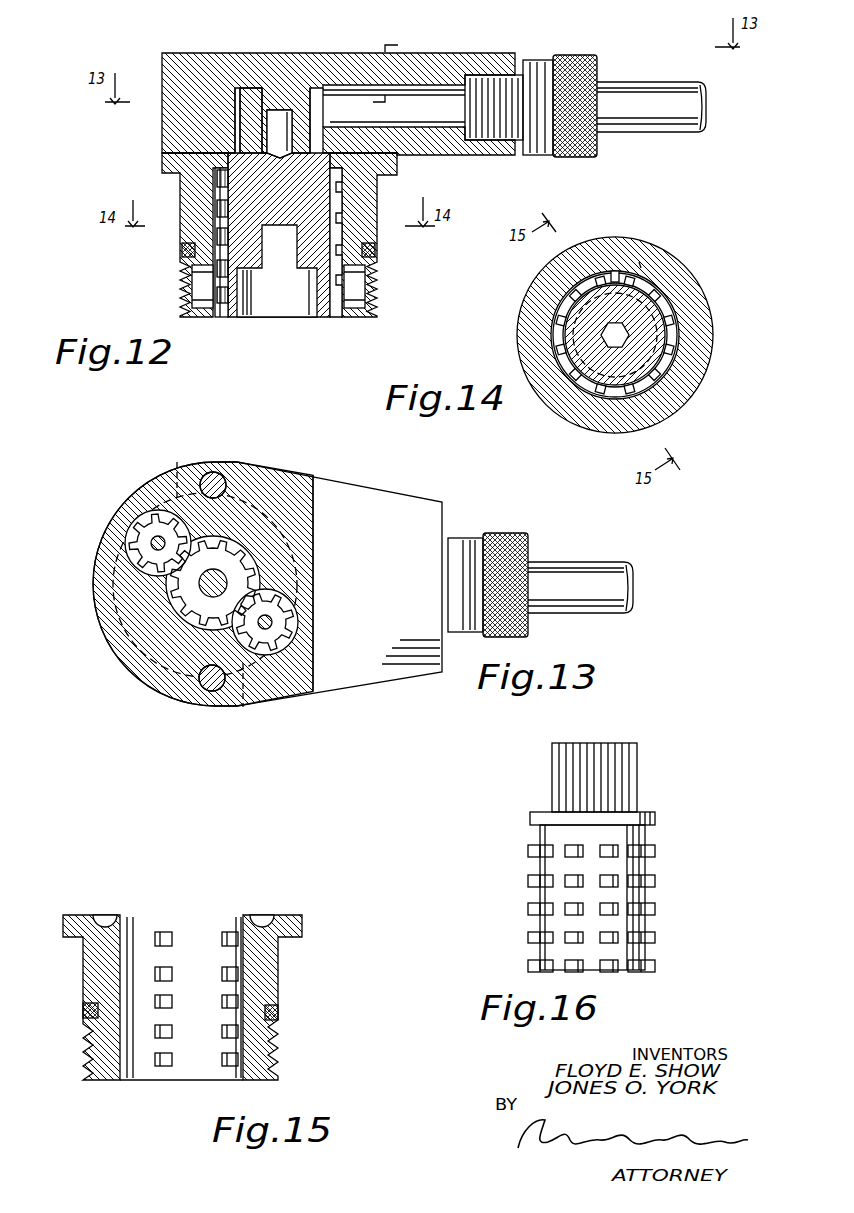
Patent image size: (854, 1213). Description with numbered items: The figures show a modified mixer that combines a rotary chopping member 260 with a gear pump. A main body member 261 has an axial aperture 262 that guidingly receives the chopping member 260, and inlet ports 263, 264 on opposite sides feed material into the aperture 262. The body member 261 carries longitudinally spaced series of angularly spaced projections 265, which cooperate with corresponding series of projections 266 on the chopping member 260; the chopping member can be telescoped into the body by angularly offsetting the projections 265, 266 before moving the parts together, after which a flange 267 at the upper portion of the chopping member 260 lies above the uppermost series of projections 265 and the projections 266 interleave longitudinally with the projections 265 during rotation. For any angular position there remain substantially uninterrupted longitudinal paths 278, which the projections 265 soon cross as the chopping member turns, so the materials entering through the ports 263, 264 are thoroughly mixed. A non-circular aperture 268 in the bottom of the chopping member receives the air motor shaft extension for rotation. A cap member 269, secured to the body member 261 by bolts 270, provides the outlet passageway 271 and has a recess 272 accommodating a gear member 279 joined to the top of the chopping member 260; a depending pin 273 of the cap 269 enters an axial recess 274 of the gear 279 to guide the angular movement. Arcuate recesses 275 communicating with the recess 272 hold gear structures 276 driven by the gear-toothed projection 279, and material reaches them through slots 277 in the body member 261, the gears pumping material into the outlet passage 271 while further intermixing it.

In FIG. 12, the rotary chopping member 260 is at (343, 185).
In FIG. 14, the rotary chopping member 260 is at (660, 310).
In FIG. 16, the rotary chopping member 260 is at (658, 840).
In FIG. 12, the main body member 261 is at (190, 180).
In FIG. 14, the main body member 261 is at (685, 380).
In FIG. 15, the main body member 261 is at (85, 978).
In FIG. 12, the axial aperture 262 is at (340, 213).
In FIG. 14, the axial aperture 262 is at (575, 385).
In FIG. 13, the axial aperture 262 is at (150, 625).
In FIG. 15, the axial aperture 262 is at (243, 960).
In FIG. 12, the inlet port 263 is at (200, 300).
In FIG. 12, the inlet port 264 is at (353, 307).
In FIG. 14, the projections of the main body member 265 is at (665, 285).
In FIG. 15, the projections of the main body member 265 is at (163, 933).
In FIG. 12, the projections of the chopping member 266 is at (220, 190).
In FIG. 14, the projections of the chopping member 266 is at (640, 265).
In FIG. 16, the projections of the chopping member 266 is at (540, 876).
In FIG. 12, the flange 267 is at (180, 160).
In FIG. 16, the flange 267 is at (530, 817).
In FIG. 12, the non-circular aperture 268 is at (290, 253).
In FIG. 14, the non-circular aperture 268 is at (560, 352).
In FIG. 12, the cap member 269 is at (197, 67).
In FIG. 13, the cap member 269 is at (165, 590).
In FIG. 13, the bolts 270 is at (218, 478).
In FIG. 12, the outlet passageway 271 is at (395, 96).
In FIG. 13, the outlet passageway 271 is at (315, 583).
In FIG. 12, the recess 272 is at (237, 113).
In FIG. 13, the pin 273 is at (198, 583).
In FIG. 12, the axial recess 274 is at (323, 117).
In FIG. 12, the arcuate recesses 275 is at (277, 113).
In FIG. 13, the arcuate recesses 275 is at (130, 507).
In FIG. 13, the gear structures 276 is at (128, 537).
In FIG. 13, the slots 277 is at (177, 475).
In FIG. 15, the slots 277 is at (105, 925).
In FIG. 14, the uninterrupted longitudinal paths 278 is at (620, 275).
In FIG. 12, the gear member 279 is at (257, 125).
In FIG. 13, the gear member 279 is at (205, 592).
In FIG. 16, the gear member 279 is at (615, 780).